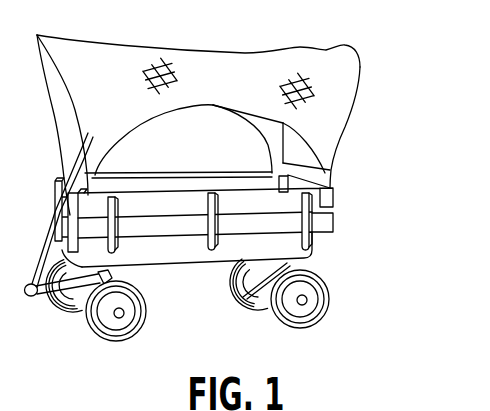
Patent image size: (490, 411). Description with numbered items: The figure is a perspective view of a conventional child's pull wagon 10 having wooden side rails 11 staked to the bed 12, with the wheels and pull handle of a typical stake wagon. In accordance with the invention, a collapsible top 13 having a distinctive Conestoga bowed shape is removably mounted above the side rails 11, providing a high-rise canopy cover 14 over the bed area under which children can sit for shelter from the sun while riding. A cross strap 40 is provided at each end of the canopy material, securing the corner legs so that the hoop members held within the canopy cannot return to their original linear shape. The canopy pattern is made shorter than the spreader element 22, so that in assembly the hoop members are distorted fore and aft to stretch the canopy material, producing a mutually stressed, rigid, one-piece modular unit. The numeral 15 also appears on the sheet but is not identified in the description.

The wagon 10 is at (229, 237).
The side rail 11 is at (347, 197).
The wagon bed 12 is at (171, 258).
The canopy 13 is at (312, 48).
The canopy cover 14 is at (125, 103).
The wagon body 15 is at (408, 406).
The handle 22 is at (132, 410).
The canopy support frame 40 is at (307, 172).